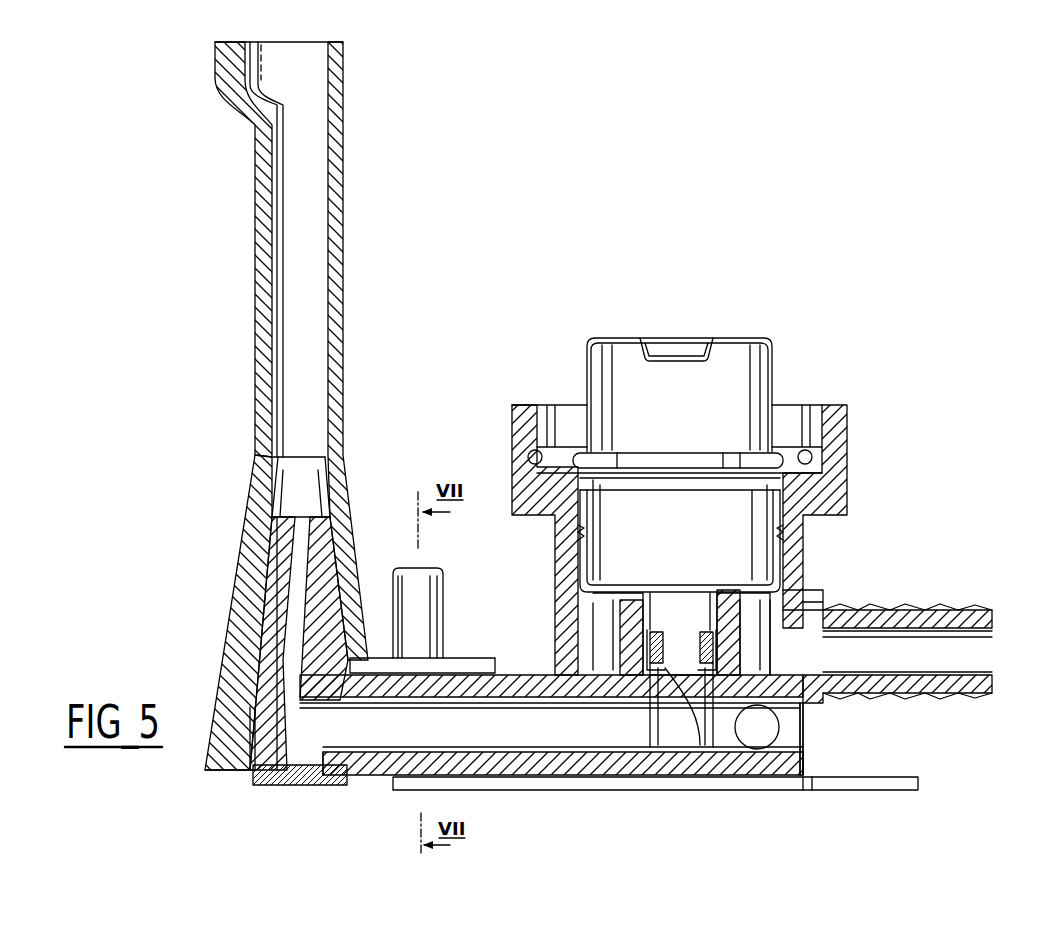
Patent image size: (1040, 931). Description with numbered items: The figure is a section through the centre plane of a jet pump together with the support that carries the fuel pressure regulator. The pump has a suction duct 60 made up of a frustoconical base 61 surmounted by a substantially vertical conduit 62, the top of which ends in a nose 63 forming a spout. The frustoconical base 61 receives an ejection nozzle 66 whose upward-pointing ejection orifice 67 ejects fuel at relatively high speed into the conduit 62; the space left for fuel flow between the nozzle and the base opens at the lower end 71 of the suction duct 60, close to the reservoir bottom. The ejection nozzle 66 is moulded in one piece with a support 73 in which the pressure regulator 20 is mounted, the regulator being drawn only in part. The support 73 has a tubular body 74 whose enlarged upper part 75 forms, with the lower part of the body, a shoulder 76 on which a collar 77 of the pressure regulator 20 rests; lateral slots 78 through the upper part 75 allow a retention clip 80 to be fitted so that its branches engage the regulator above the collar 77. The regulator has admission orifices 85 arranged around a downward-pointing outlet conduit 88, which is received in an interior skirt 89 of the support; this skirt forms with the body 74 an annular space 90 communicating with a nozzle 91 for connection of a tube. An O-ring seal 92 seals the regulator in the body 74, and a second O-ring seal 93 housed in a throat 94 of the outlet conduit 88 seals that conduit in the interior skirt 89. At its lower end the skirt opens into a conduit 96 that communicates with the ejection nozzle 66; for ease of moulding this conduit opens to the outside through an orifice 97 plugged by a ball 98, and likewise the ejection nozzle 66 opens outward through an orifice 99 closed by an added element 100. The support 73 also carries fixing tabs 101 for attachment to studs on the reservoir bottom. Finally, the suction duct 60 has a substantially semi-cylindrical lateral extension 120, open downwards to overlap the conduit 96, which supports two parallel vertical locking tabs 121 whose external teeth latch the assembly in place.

The pressure regulator 20 is at (674, 430).
The suction duct 60 is at (291, 435).
The frustoconical base 61 is at (238, 585).
The vertical conduit 62 is at (345, 190).
The nose 63 is at (228, 78).
The ejection nozzle 66 is at (332, 543).
The ejection orifice 67 is at (300, 515).
The lower end 71 is at (248, 767).
The support 73 is at (669, 620).
The tubular body 74 is at (572, 540).
The upper part 75 is at (837, 470).
The shoulder 76 is at (518, 470).
The collar 77 is at (553, 440).
The lateral slots 78 is at (533, 450).
The retention clip 80 is at (700, 455).
The admission orifices 85 is at (797, 592).
The outlet conduit 88 is at (640, 606).
The interior skirt 89 is at (815, 688).
The annular space 90 is at (868, 612).
The nozzle 91 is at (983, 607).
The O-ring seal 92 is at (787, 532).
The O-ring seal 93 is at (655, 645).
The throat 94 is at (695, 715).
The conduit 96 is at (712, 700).
The orifice 97 is at (797, 742).
The ball 98 is at (762, 727).
The orifice 99 is at (287, 760).
The added element 100 is at (297, 782).
The fixing tabs 101 is at (852, 785).
The lateral extension 120 is at (468, 660).
The locking tabs 121 is at (413, 580).